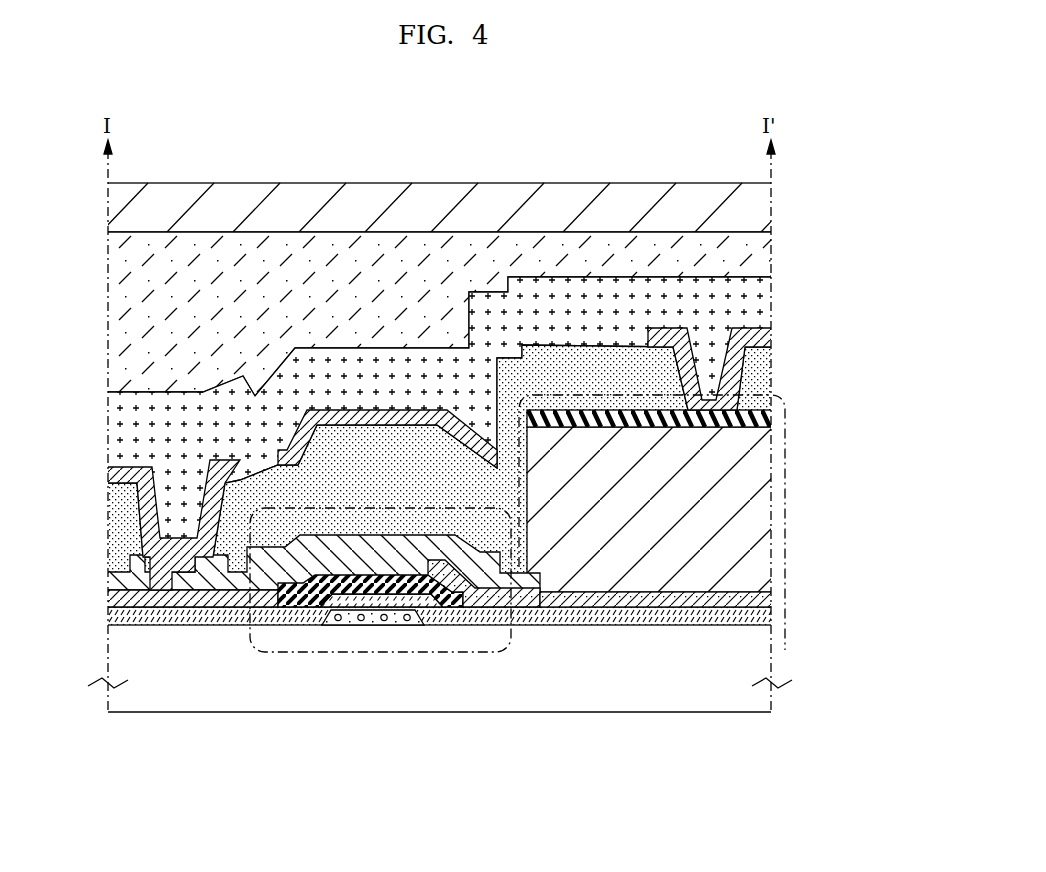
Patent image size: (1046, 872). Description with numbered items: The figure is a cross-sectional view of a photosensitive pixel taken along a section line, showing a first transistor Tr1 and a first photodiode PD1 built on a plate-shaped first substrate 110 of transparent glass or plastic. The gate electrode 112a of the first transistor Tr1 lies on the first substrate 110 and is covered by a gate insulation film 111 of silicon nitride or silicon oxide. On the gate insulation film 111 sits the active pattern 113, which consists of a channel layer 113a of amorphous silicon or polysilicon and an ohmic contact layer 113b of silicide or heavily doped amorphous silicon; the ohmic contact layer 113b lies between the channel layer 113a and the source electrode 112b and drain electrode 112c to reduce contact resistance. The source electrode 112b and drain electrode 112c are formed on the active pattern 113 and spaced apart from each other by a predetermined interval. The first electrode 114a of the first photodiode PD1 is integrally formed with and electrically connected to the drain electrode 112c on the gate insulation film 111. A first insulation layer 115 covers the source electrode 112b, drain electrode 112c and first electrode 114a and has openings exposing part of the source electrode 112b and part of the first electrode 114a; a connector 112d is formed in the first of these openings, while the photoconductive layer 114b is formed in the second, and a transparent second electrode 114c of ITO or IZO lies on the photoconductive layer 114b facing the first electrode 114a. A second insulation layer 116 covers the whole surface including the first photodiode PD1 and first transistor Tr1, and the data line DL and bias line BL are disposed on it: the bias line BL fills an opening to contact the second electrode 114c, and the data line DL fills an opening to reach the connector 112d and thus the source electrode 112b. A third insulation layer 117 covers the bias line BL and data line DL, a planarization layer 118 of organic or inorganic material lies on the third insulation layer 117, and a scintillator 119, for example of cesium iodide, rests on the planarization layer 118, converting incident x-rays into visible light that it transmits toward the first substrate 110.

The first substrate 110 is at (760, 657).
The gate insulation film 111 is at (120, 613).
The gate electrode 112a is at (375, 615).
The source electrode 112b is at (230, 600).
The drain electrode 112c is at (518, 593).
The connector 112d is at (172, 600).
The active pattern 113 is at (392, 691).
The channel layer 113a is at (442, 610).
The ohmic contact layer 113b is at (460, 592).
The first electrode 114a is at (760, 597).
The photoconductive layer 114b is at (760, 517).
The second electrode 114c is at (772, 421).
The first insulation layer 115 is at (120, 589).
The second insulation layer 116 is at (125, 524).
The third insulation layer 117 is at (120, 425).
The planarization layer 118 is at (125, 328).
The scintillator 119 is at (120, 214).
The bias line BL is at (385, 410).
The data line DL is at (125, 478).
The first transistor Tr1 is at (315, 652).
The first photodiode PD1 is at (658, 615).